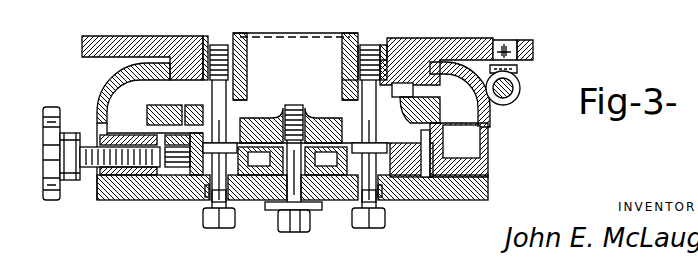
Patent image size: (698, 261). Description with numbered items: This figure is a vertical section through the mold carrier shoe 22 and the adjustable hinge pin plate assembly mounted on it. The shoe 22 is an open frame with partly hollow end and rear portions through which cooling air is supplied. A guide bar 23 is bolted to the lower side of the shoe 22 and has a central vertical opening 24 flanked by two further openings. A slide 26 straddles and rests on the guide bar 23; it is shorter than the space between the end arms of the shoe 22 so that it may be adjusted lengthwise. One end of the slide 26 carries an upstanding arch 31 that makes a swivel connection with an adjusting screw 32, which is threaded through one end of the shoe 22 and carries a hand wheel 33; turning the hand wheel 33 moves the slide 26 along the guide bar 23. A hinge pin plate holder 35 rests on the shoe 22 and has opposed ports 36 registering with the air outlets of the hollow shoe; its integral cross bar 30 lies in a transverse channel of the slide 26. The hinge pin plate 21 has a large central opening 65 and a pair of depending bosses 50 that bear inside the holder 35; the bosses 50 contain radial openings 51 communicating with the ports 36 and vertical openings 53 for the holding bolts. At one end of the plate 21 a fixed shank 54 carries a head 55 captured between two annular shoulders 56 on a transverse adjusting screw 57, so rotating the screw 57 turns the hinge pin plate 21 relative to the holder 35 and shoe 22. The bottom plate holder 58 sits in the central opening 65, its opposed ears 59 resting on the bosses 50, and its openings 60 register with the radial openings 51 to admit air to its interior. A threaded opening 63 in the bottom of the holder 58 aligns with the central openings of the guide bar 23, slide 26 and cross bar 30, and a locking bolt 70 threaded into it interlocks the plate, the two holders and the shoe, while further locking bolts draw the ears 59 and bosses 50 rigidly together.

The hinge pin plate 21 is at (136, 40).
The mold carrier shoe 22 is at (489, 160).
The guide bar 23 is at (177, 197).
The central vertical opening 24 is at (280, 197).
The slide 26 is at (420, 146).
The cross bar 30 is at (276, 113).
The upstanding arch 31 is at (187, 107).
The adjusting screw 32 is at (97, 182).
The hand wheel 33 is at (47, 205).
The hinge pin plate holder 35 is at (108, 80).
The ports 36 is at (456, 118).
The bosses 50 is at (343, 70).
The radial openings 51 is at (393, 92).
The vertical openings 53 is at (350, 81).
The shank 54 is at (538, 50).
The head 55 is at (518, 68).
The annular shoulders 56 is at (521, 90).
The transverse adjusting screw 57 is at (512, 96).
The bottom plate holder 58 is at (318, 34).
The ears 59 is at (386, 40).
The openings 60 is at (250, 102).
The threaded opening 63 is at (312, 117).
The central opening 65 is at (205, 44).
The locking bolt 70 is at (300, 232).